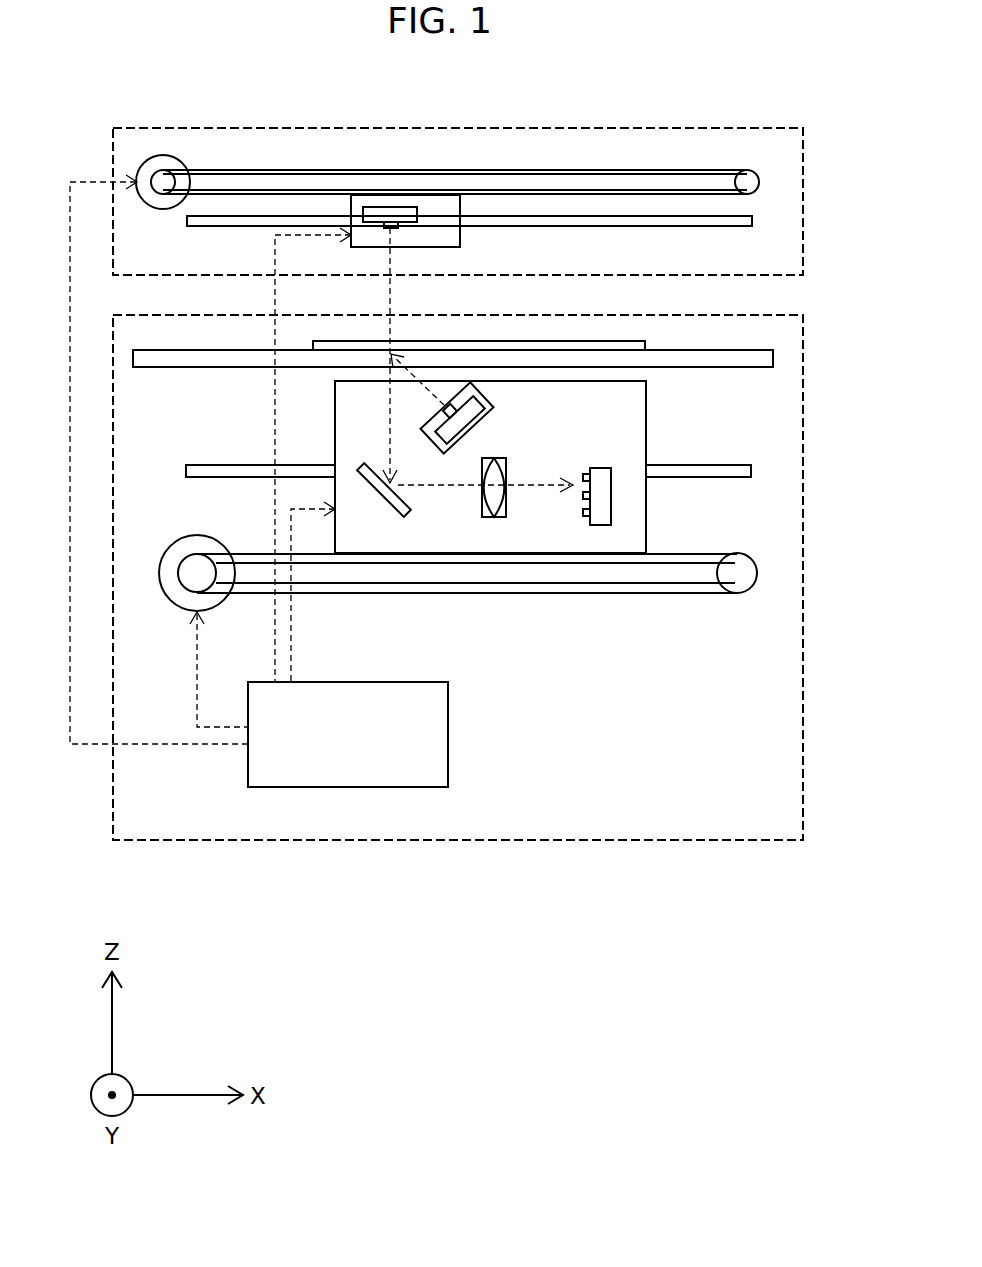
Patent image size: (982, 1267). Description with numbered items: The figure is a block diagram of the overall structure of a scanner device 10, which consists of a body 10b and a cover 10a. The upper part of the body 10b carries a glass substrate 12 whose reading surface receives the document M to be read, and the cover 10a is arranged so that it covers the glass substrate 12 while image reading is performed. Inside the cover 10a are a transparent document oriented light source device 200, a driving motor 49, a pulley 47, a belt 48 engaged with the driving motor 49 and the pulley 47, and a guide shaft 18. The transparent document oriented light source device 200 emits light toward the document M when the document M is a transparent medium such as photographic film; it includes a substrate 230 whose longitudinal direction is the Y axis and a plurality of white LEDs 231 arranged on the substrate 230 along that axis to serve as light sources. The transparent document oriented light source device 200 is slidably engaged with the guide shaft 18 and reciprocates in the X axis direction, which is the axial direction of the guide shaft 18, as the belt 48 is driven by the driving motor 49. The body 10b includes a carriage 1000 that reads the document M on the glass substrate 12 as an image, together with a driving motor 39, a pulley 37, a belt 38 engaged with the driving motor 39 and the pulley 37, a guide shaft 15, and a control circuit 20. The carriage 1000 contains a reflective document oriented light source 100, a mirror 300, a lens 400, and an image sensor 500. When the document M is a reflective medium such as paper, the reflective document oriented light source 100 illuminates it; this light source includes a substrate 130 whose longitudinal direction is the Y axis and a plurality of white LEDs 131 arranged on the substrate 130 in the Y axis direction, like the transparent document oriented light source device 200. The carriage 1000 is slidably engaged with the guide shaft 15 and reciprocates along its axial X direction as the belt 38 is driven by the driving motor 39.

The scanner device 10 is at (710, 77).
The cover 10a is at (600, 127).
The body 10b is at (803, 416).
The glass substrate 12 is at (763, 350).
The guide shaft 15 is at (730, 465).
The guide shaft 18 is at (753, 221).
The control circuit 20 is at (448, 735).
The pulley 37 is at (752, 590).
The belt 38 is at (660, 594).
The driving motor 39 is at (186, 540).
The pulley 47 is at (758, 174).
The belt 48 is at (667, 169).
The driving motor 49 is at (182, 163).
The reflective document oriented light source 100 is at (471, 424).
The substrate 130 is at (486, 406).
The white LEDs 131 is at (440, 407).
The transparent document oriented light source device 200 is at (460, 245).
The substrate 230 is at (408, 222).
The white LEDs 231 is at (386, 228).
The mirror 300 is at (385, 504).
The lens 400 is at (484, 512).
The image sensor 500 is at (600, 468).
The carriage 1000 is at (646, 410).
The document M is at (645, 345).